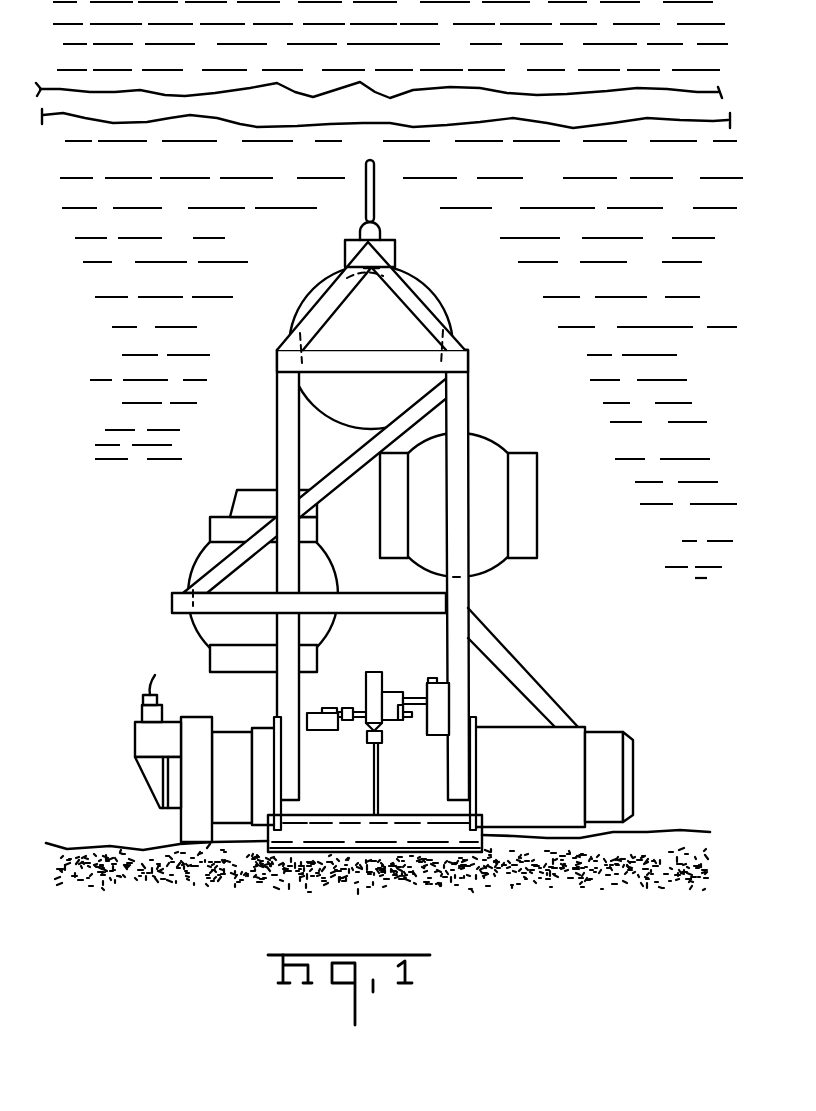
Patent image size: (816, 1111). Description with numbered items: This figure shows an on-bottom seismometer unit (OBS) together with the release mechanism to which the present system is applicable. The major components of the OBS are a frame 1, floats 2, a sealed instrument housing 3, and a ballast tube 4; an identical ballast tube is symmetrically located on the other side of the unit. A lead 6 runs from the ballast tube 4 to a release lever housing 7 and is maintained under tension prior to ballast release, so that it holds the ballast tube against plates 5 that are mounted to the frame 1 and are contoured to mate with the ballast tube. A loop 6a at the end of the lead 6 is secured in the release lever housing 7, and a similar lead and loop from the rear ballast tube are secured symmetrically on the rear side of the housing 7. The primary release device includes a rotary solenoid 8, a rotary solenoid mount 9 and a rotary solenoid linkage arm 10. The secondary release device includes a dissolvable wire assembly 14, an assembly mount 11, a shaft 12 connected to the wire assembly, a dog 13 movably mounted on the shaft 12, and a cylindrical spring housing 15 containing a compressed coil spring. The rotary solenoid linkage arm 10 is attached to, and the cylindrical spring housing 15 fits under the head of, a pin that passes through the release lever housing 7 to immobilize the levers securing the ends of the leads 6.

The frame 1 is at (468, 370).
The floats 2 is at (437, 298).
The sealed instrument housing 3 is at (608, 735).
The ballast tube 4 is at (467, 845).
The plates 5 is at (273, 808).
The lead 6 is at (379, 798).
The loop 6a is at (366, 731).
The release lever housing 7 is at (367, 680).
The rotary solenoid 8 is at (435, 678).
The rotary solenoid mount 9 is at (449, 715).
The rotary solenoid linkage arm 10 is at (410, 698).
The assembly mount 11 is at (307, 720).
The shaft 12 is at (392, 718).
The dog 13 is at (403, 718).
The dissolvable wire assembly 14 is at (324, 708).
The cylindrical spring housing 15 is at (393, 692).